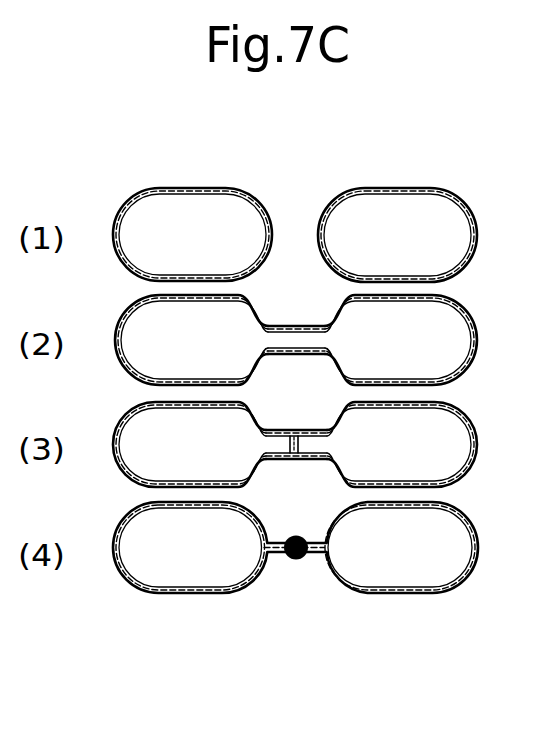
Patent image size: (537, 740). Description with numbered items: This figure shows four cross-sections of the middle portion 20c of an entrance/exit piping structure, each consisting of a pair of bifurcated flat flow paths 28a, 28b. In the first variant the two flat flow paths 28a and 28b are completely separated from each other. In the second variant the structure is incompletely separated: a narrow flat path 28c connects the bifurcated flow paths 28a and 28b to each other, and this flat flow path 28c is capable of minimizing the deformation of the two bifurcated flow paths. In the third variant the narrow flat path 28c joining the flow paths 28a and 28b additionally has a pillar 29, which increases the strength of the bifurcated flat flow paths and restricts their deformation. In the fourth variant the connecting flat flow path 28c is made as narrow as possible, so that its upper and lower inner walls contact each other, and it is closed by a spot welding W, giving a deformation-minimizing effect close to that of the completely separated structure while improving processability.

The middle portion 20c is at (348, 190).
The bifurcated flat flow path 28a is at (181, 211).
The bifurcated flat flow path 28b is at (383, 220).
The narrow flat flow path 28c is at (288, 342).
The pillar 29 is at (292, 432).
The spot welding W is at (296, 560).